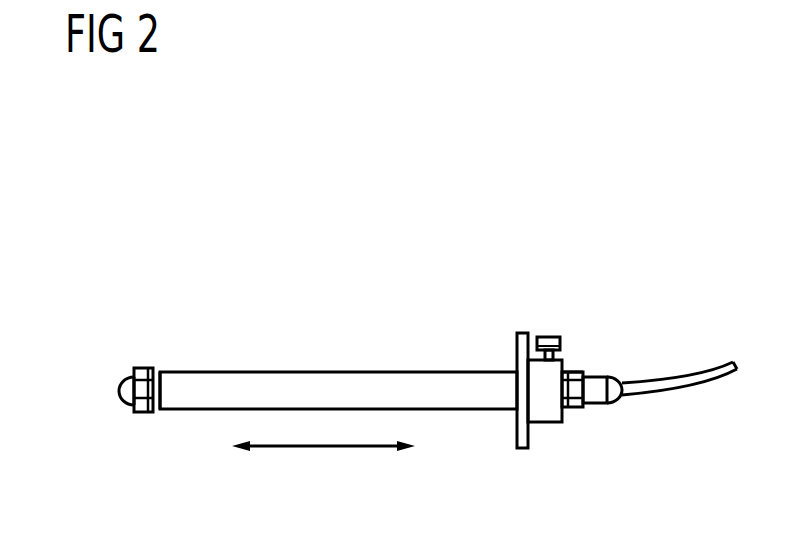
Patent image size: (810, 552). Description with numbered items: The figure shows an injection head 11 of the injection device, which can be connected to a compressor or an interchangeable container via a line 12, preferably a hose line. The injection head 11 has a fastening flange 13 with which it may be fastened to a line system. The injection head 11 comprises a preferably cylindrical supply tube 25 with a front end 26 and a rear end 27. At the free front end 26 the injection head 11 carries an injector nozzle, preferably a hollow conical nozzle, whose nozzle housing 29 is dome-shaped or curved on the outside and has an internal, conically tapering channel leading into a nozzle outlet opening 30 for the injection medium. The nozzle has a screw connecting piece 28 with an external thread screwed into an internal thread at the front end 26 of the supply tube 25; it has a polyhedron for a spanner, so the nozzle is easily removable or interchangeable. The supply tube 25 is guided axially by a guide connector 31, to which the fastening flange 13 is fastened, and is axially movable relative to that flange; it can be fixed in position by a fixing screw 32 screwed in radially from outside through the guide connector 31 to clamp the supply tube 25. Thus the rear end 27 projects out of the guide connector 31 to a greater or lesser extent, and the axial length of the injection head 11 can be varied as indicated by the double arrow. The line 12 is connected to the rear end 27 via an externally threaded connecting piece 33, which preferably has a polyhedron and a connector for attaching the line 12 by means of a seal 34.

The injection head 11 is at (301, 262).
The line 12 is at (708, 373).
The fastening flange 13 is at (522, 350).
The supply tube 25 is at (197, 397).
The front end 26 is at (178, 377).
The rear end 27 is at (567, 408).
The screw connecting piece 28 is at (143, 377).
The nozzle housing 29 is at (121, 407).
The nozzle outlet opening 30 is at (127, 397).
The guide connector 31 is at (550, 408).
The fixing screw 32 is at (553, 336).
The connecting piece 33 is at (576, 371).
The seal 34 is at (617, 403).